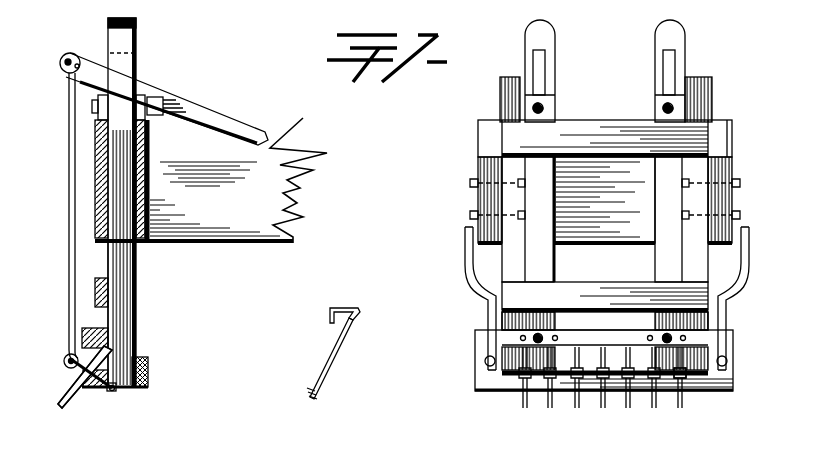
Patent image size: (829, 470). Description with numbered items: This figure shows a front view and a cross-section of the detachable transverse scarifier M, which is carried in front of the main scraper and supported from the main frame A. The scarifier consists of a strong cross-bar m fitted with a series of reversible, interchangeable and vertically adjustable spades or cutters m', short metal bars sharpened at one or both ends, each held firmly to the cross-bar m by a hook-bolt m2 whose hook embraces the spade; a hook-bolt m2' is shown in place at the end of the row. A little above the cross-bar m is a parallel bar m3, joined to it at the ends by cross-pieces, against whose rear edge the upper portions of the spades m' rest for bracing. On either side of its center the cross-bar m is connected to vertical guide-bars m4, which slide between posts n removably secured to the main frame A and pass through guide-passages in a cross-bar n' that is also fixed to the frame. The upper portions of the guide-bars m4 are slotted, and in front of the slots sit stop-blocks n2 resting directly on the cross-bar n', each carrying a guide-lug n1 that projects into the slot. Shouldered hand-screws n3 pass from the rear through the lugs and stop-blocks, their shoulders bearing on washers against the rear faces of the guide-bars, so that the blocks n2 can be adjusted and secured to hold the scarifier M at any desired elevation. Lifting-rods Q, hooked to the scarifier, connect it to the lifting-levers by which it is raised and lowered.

The frame A is at (445, 214).
The connecting rod Q is at (168, 88).
The posts n is at (601, 99).
The cross-bar n' is at (413, 181).
The pin n1 is at (663, 105).
The stop-blocks n2 is at (92, 113).
The shouldered hand-screws n3 is at (167, 97).
The scarifier M is at (82, 344).
The cross-bar m is at (372, 390).
The spades or cutters m' is at (355, 393).
The hook-bolt m2 is at (222, 362).
The hook bolt m2' is at (704, 393).
The parallel bar m3 is at (408, 351).
The vertical guide-bars m4 is at (127, 320).